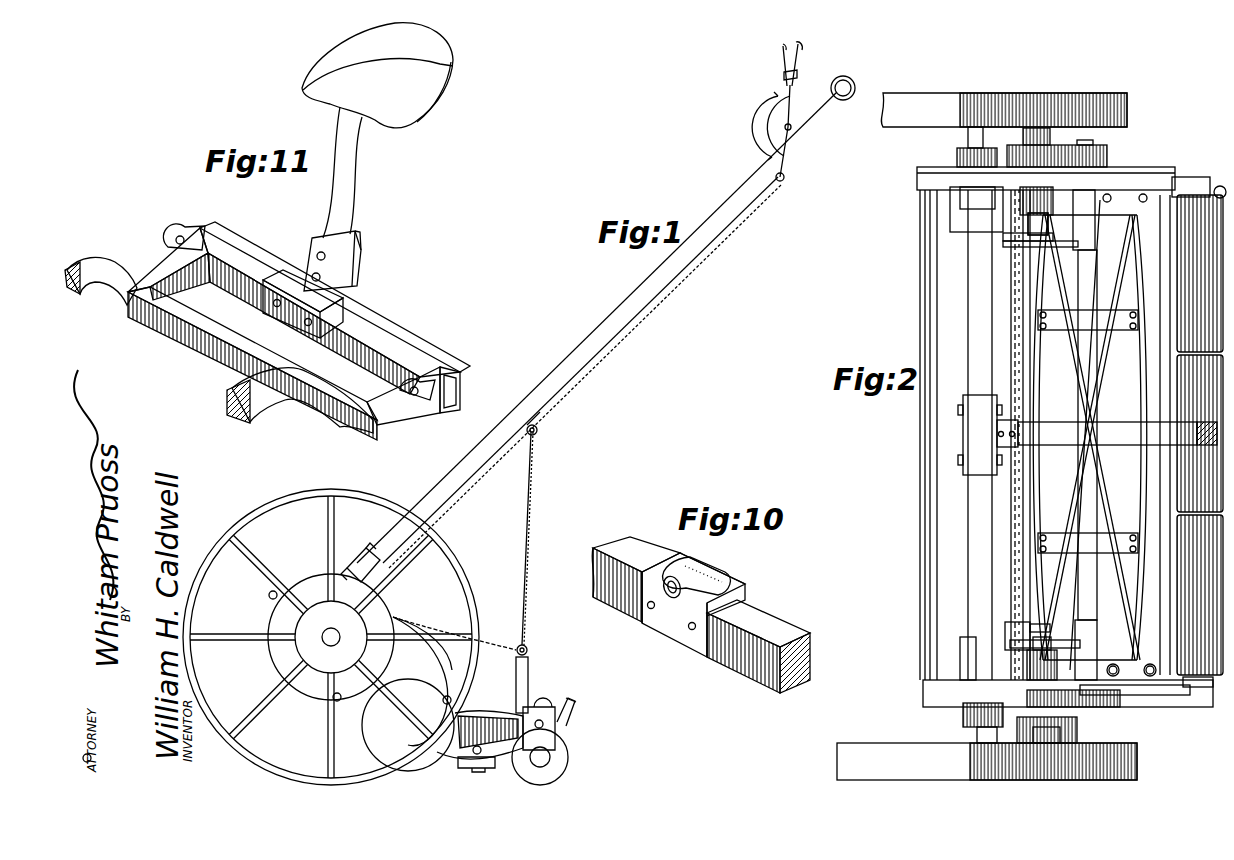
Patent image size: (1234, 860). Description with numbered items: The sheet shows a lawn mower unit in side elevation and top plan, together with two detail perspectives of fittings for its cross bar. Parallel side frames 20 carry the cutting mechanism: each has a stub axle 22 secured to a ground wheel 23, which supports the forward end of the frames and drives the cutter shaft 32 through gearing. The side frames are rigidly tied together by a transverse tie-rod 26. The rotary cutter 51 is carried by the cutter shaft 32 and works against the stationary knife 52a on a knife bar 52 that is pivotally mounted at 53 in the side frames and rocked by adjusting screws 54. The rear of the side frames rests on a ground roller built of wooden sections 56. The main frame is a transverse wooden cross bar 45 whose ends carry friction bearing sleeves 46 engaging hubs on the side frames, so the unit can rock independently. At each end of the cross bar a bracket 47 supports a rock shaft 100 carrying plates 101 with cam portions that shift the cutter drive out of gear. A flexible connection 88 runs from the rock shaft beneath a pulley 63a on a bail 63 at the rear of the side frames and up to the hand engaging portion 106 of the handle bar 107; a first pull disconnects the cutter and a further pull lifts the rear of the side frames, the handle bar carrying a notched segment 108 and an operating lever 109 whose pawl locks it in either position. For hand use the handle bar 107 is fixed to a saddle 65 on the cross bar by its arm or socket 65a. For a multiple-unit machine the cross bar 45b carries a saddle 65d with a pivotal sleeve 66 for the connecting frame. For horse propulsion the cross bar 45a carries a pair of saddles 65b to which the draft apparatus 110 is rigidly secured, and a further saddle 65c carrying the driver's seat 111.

In FIG. 11, the driver's seat 111 is at (442, 86).
In FIG. 11, the cross bar 45a is at (392, 343).
In FIG. 10, the cross bar 45b is at (752, 670).
In FIG. 11, the draft apparatus 110 is at (226, 338).
In FIG. 11, the saddles 65b is at (418, 425).
In FIG. 11, the saddle 65c is at (297, 322).
In FIG. 10, the saddle 65d is at (720, 588).
In FIG. 10, the pivotal sleeve 66 is at (697, 585).
In FIG. 1, the ground wheels 23 is at (465, 590).
In FIG. 2, the ground wheels 23 is at (1125, 105).
In FIG. 1, the stub axle 22 is at (327, 645).
In FIG. 2, the stub axle 22 is at (965, 136).
In FIG. 1, the side frames 20 is at (393, 608).
In FIG. 2, the side frames 20 is at (1138, 180).
In FIG. 1, the cutter shaft 32 is at (432, 718).
In FIG. 2, the cutter shaft 32 is at (1093, 502).
In FIG. 1, the rotary cutter 51 is at (418, 765).
In FIG. 2, the rotary cutter 51 is at (1047, 578).
In FIG. 1, the pivot 53 is at (474, 754).
In FIG. 1, the stationary knife 52a is at (482, 769).
In FIG. 1, the roller sections 56 is at (563, 764).
In FIG. 2, the roller sections 56 is at (1182, 234).
In FIG. 1, the bail 63 is at (528, 680).
In FIG. 2, the bail 63 is at (1172, 620).
In FIG. 1, the pulley 63a is at (528, 650).
In FIG. 1, the flexible connection 88 is at (527, 518).
In FIG. 1, the handle bar 107 is at (622, 285).
In FIG. 2, the handle bar 107 is at (1043, 437).
In FIG. 1, the hand engaging portion 106 is at (852, 80).
In FIG. 1, the operating lever 109 is at (800, 58).
In FIG. 1, the segment 108 is at (757, 128).
In FIG. 2, the tie-rod 26 is at (920, 428).
In FIG. 2, the cross bar 45 is at (975, 305).
In FIG. 2, the rock shaft 100 is at (1012, 505).
In FIG. 2, the saddle 65 is at (976, 435).
In FIG. 2, the arm or socket 65a is at (1010, 420).
In FIG. 2, the adjusting screws 54 is at (1118, 668).
In FIG. 2, the stationary knife bar 52 is at (1130, 690).
In FIG. 2, the bracket 47 is at (1012, 234).
In FIG. 2, the plates 101 is at (1035, 245).
In FIG. 2, the bearing sleeve 46 is at (962, 660).